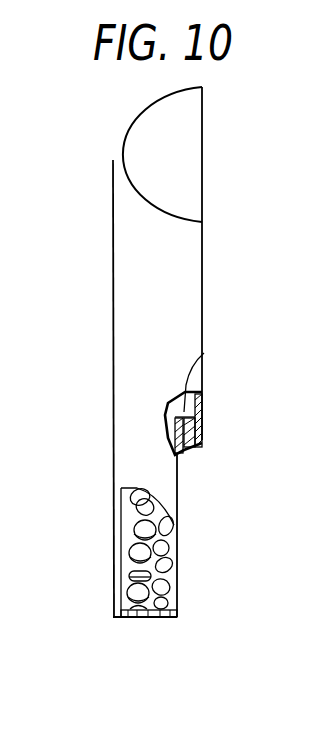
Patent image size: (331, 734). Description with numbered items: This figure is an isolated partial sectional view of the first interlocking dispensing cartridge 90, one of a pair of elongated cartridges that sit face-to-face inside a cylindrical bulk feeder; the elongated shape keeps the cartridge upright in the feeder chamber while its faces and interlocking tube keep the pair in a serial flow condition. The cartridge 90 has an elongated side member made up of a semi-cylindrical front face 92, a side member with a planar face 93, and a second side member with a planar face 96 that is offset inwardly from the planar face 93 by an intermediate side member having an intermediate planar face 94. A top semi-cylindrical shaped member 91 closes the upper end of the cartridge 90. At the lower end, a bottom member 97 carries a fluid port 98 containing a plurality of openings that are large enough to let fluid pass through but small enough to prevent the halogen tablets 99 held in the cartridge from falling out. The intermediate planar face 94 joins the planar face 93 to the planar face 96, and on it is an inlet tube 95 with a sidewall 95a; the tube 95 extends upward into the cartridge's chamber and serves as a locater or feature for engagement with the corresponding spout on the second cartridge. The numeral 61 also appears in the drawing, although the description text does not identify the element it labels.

The first interlocking dispensing cartridge 90 is at (142, 352).
The top semi-cylindrical shaped member 91 is at (175, 145).
The semi-cylindrical front face 92 is at (130, 328).
The planar face 93 is at (203, 308).
The clip 61 is at (204, 353).
The sidewall 95a is at (205, 425).
The intermediate planar face 94 is at (195, 441).
The inlet tube 95 is at (187, 451).
The planar face 96 is at (136, 547).
The halogen tablets 99 is at (145, 527).
The bottom member 97 is at (128, 618).
The fluid port 98 is at (137, 620).